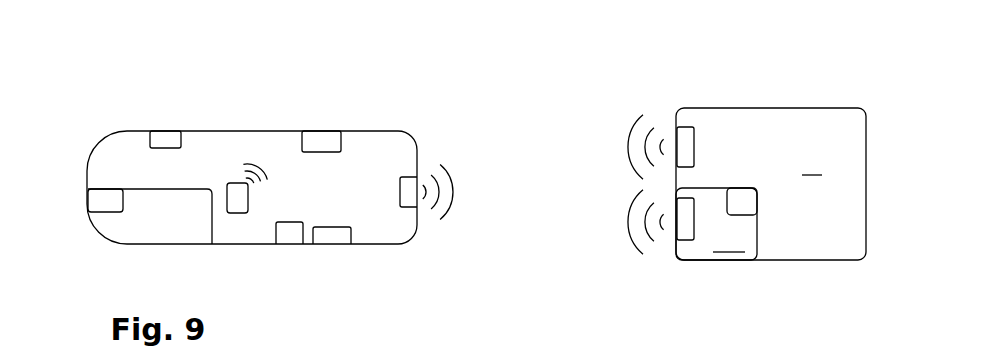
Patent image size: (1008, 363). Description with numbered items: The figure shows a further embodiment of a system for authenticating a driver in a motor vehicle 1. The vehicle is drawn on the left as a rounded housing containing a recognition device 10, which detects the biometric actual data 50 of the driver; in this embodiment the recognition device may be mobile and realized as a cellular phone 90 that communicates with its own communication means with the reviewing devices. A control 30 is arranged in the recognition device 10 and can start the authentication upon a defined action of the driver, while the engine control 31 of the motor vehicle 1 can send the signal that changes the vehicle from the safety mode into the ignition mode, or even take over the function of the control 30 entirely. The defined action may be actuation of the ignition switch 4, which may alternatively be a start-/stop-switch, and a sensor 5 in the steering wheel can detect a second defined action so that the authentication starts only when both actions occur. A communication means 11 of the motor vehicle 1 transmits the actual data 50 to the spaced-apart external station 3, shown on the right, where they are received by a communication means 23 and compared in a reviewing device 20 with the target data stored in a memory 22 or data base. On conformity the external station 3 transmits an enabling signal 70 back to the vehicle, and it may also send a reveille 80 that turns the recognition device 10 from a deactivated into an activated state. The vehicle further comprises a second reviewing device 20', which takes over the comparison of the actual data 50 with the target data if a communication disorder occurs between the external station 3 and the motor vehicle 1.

The motor vehicle 1 is at (318, 106).
The recognition device 10 is at (155, 228).
The control 30 is at (98, 203).
The engine control 31 is at (172, 137).
The second reviewing device 20' is at (298, 108).
The cellular phone 90 is at (238, 197).
The sensor 5 is at (288, 233).
The ignition switch 4 is at (338, 233).
The communication means 11 is at (405, 185).
The actual data 50 is at (445, 167).
The external station 3 is at (771, 184).
The reviewing device 20 is at (716, 224).
The communication means 23 is at (690, 217).
The memory 22 is at (745, 200).
The reveille 80 is at (638, 118).
The enabling signal 70 is at (636, 240).